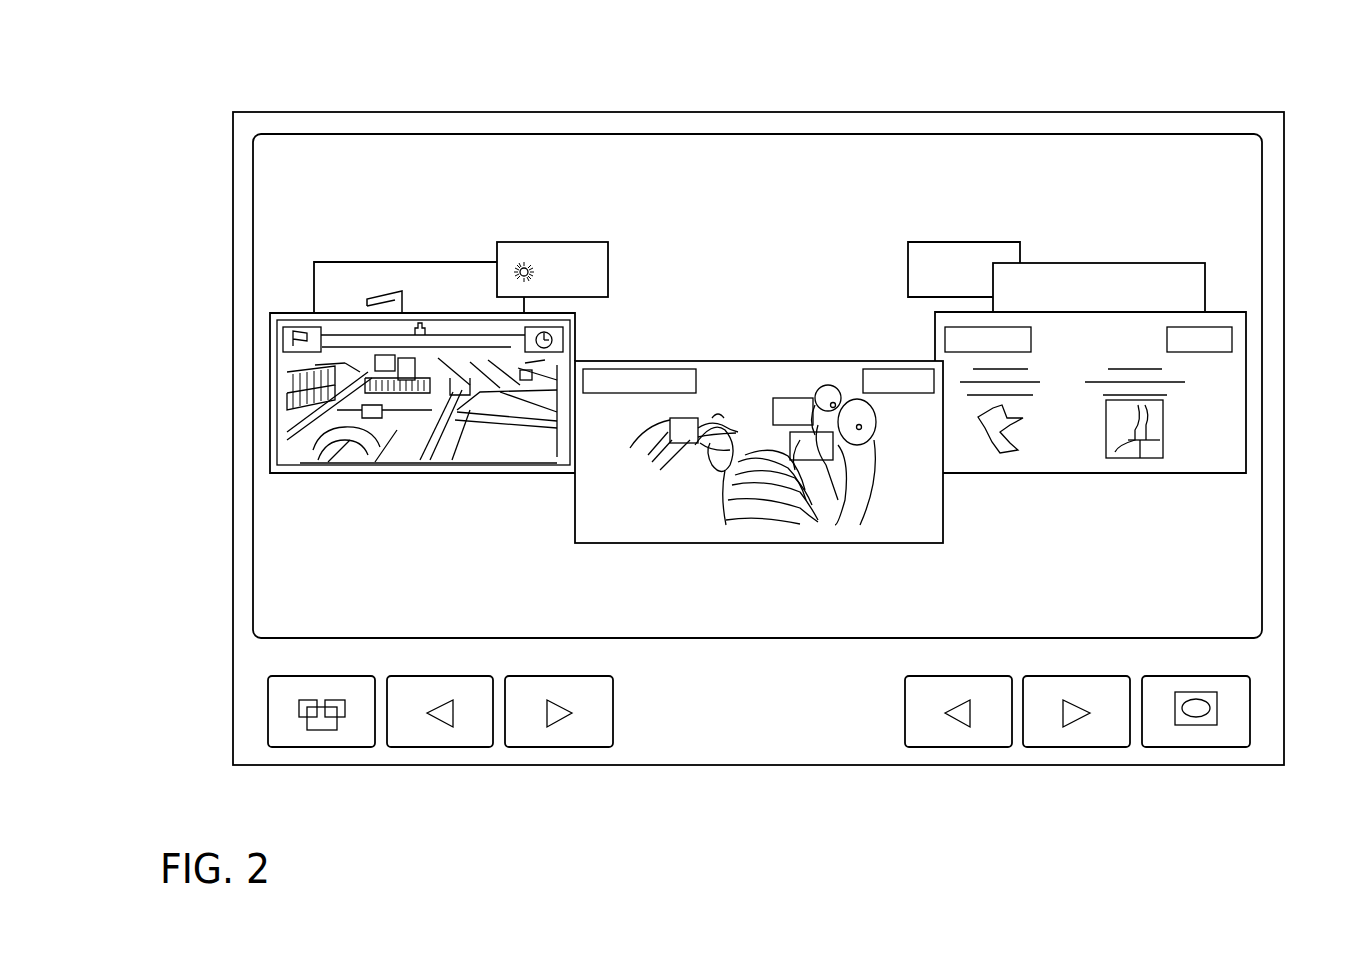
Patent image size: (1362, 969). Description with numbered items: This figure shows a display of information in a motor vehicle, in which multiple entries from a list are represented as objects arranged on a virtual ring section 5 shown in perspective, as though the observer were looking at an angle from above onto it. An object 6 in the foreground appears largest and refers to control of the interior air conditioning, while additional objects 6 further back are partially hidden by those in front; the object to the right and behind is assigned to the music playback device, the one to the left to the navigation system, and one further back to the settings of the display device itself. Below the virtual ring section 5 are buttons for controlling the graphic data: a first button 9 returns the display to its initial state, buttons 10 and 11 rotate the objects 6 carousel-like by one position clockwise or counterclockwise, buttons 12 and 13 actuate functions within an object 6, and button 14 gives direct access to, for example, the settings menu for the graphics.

The virtual ring section 5 is at (1262, 107).
The object 6 is at (281, 424).
The first button 9 is at (345, 736).
The button 10 is at (473, 736).
The button 11 is at (590, 736).
The button 12 is at (953, 736).
The button 13 is at (1050, 736).
The button 14 is at (1182, 736).